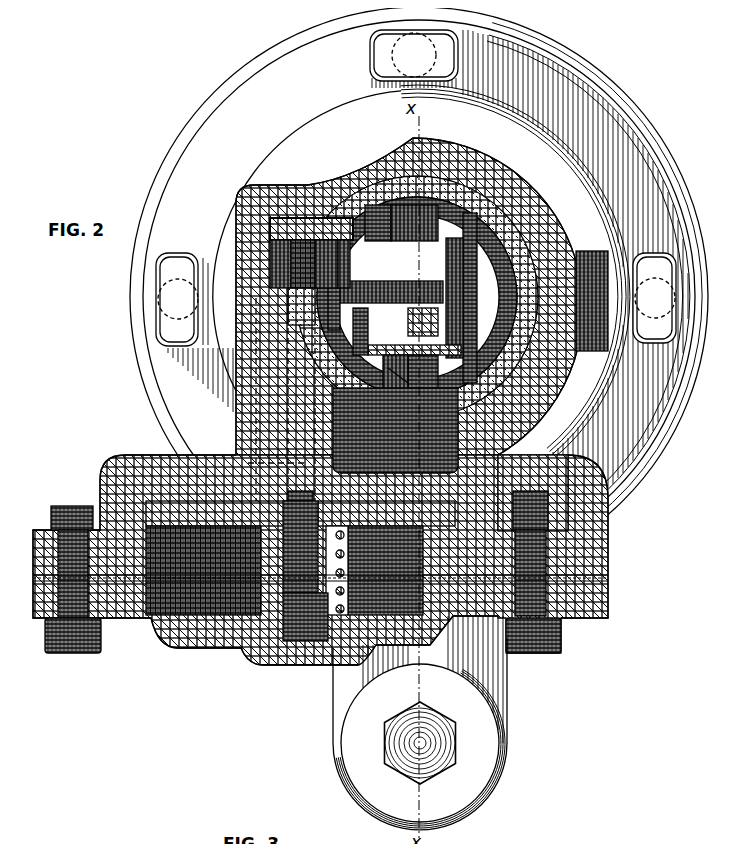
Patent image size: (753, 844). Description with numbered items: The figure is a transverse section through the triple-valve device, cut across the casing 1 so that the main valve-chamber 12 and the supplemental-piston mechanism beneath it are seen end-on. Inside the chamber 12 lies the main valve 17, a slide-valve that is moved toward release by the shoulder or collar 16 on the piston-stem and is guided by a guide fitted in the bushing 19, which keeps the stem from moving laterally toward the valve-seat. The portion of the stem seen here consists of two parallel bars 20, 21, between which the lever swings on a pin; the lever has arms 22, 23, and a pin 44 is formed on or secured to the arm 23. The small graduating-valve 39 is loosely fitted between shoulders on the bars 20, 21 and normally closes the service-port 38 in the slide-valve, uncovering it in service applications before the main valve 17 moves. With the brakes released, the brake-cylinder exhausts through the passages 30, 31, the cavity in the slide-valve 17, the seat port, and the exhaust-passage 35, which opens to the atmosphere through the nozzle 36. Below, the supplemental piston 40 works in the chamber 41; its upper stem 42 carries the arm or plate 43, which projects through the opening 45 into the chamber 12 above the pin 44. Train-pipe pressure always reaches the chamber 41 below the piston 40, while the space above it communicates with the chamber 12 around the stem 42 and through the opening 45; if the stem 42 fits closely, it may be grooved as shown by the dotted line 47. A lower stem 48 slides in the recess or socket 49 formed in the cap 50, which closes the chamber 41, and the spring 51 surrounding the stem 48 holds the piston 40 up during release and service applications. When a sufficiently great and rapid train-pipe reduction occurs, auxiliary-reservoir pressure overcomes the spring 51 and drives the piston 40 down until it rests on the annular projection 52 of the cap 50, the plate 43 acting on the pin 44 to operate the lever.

The casing 1 is at (482, 166).
The main-valve chamber 12 is at (458, 248).
The shoulder or collar 16 is at (466, 283).
The main valve 17 is at (458, 400).
The bushing 19 is at (498, 232).
The parallel bar 20 is at (470, 312).
The parallel bar 21 is at (342, 285).
The arm 22 is at (390, 308).
The arm 23 is at (401, 242).
The passage 30 is at (418, 332).
The passage 31 is at (395, 430).
The exhaust-passage 35 is at (500, 352).
The nozzle 36 is at (578, 244).
The service-port 38 is at (428, 374).
The graduating-valve 39 is at (389, 374).
The supplemental piston 40 is at (490, 500).
The chamber 41 is at (212, 500).
The stem 42 is at (270, 280).
The arm or plate 43 is at (312, 210).
The pin 44 is at (300, 318).
The opening 45 is at (320, 266).
The groove 47 is at (278, 470).
The stem 48 is at (300, 542).
The recess or socket 49 is at (305, 620).
The cap 50 is at (212, 636).
The spring 51 is at (338, 552).
The annular projection 52 is at (156, 575).